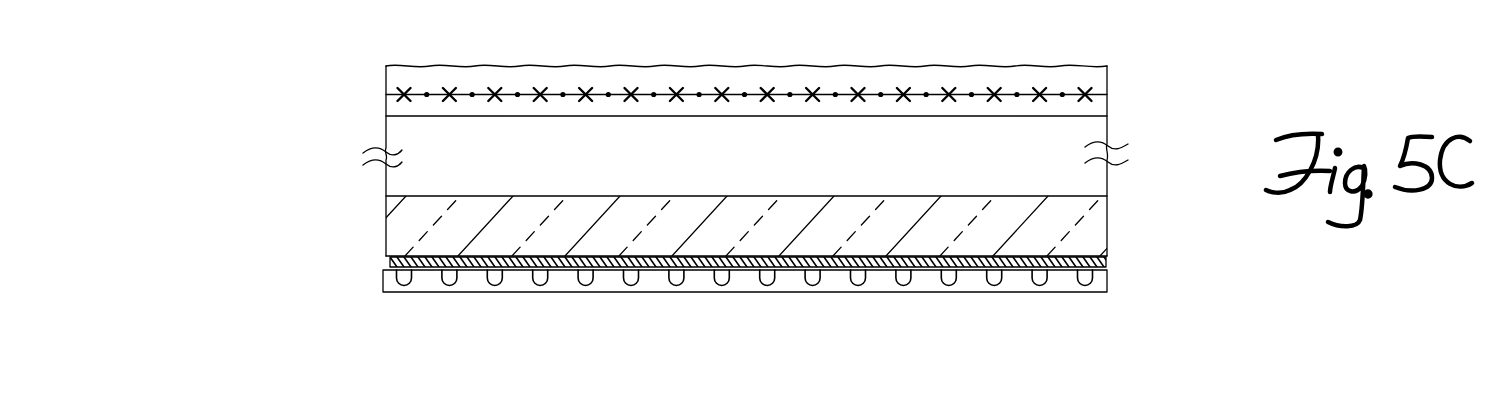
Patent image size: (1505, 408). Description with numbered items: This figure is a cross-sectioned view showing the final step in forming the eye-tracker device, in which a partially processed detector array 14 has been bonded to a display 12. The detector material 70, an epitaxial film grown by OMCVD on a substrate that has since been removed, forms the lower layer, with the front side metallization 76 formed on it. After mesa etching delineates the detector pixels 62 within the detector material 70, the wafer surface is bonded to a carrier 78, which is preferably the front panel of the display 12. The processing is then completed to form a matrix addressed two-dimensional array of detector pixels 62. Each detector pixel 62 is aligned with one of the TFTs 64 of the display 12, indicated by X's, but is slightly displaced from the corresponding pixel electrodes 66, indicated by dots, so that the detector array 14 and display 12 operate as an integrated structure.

The display 12 is at (368, 68).
The detector array 14 is at (368, 288).
The detector pixels 62 is at (725, 284).
The TFTs 64 is at (1042, 92).
The pixel electrodes 66 is at (973, 93).
The detector material 70 is at (1110, 283).
The front side metallization 76 is at (1110, 260).
The carrier 78 is at (1110, 219).